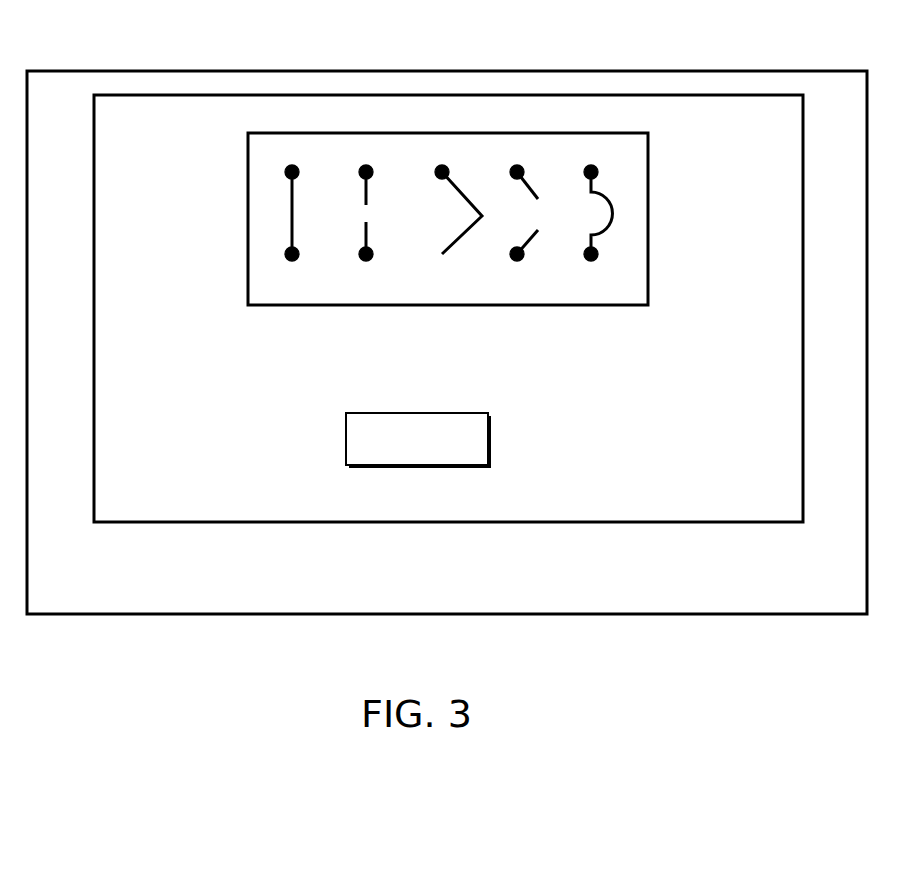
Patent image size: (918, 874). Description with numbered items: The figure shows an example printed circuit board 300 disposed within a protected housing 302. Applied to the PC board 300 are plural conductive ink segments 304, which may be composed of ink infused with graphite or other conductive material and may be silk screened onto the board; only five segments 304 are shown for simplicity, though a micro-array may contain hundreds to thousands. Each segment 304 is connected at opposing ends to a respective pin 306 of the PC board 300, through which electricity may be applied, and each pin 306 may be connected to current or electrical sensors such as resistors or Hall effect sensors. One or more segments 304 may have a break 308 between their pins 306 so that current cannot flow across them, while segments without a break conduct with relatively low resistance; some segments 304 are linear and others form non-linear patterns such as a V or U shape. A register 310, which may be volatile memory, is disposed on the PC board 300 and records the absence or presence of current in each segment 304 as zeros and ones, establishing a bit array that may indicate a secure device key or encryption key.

The printed circuit (PC) board 300 is at (285, 513).
The protected housing 302 is at (782, 608).
The conductive ink segments 304 is at (292, 165).
The pins 306 is at (292, 261).
The break 308 is at (540, 210).
The register 310 is at (346, 438).